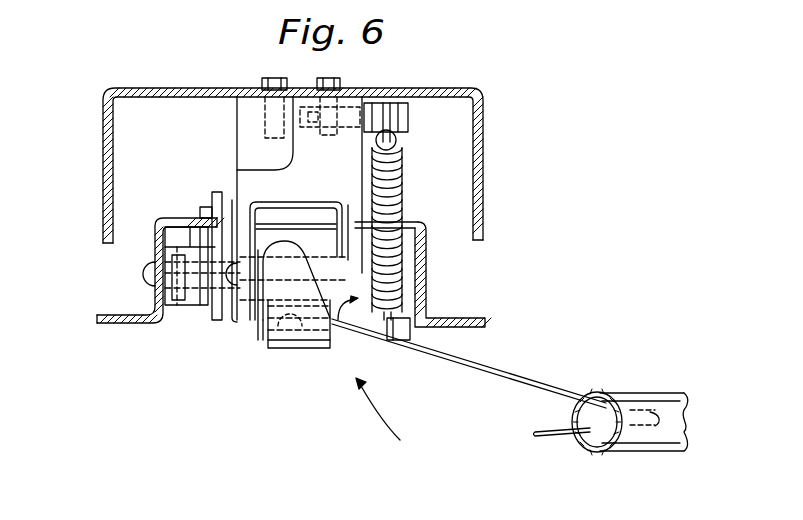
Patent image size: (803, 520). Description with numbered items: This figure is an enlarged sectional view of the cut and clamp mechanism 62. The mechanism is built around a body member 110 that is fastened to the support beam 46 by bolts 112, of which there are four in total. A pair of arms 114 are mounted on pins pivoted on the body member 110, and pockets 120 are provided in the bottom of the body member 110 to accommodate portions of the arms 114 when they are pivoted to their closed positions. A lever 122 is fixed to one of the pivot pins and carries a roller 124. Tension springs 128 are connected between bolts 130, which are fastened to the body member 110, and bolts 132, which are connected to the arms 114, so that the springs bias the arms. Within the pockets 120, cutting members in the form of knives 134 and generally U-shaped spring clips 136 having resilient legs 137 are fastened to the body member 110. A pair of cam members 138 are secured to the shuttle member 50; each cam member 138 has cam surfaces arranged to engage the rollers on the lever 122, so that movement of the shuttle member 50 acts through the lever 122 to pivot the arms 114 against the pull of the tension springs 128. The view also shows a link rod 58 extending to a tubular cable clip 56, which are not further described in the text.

The support beam 46 is at (482, 122).
The shuttle member 50 is at (428, 290).
The cable clip 56 is at (642, 455).
The link rod 58 is at (515, 378).
The cut and clamp mechanism 62 is at (391, 420).
The body member 110 is at (283, 146).
The bolts 112 is at (315, 78).
The arms 114 is at (294, 333).
The pockets 120 is at (298, 200).
The lever 122 is at (218, 322).
The roller 124 is at (198, 217).
The tension springs 128 is at (404, 186).
The bolts 130 is at (408, 120).
The bolts 132 is at (412, 331).
The knives 134 is at (256, 328).
The spring clips 136 is at (300, 200).
The resilient legs 137 is at (402, 265).
The cam members 138 is at (176, 310).